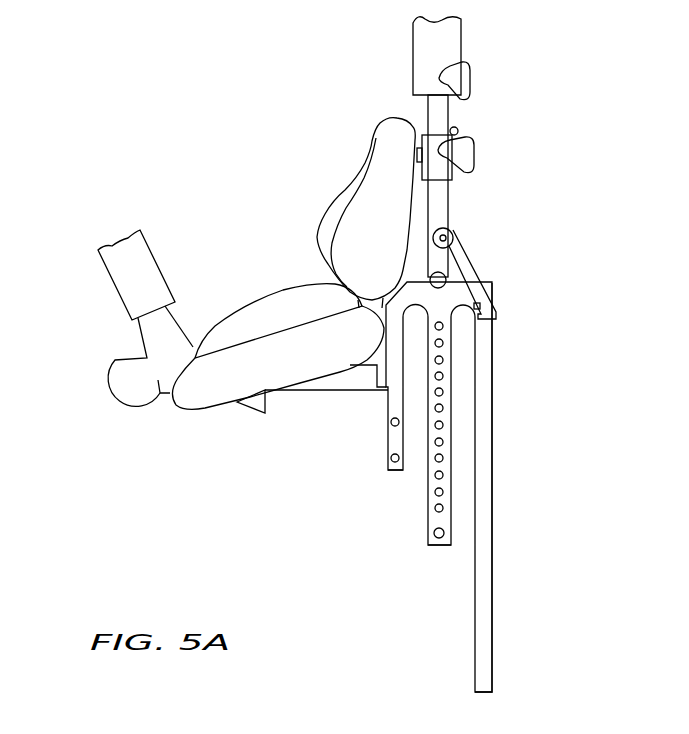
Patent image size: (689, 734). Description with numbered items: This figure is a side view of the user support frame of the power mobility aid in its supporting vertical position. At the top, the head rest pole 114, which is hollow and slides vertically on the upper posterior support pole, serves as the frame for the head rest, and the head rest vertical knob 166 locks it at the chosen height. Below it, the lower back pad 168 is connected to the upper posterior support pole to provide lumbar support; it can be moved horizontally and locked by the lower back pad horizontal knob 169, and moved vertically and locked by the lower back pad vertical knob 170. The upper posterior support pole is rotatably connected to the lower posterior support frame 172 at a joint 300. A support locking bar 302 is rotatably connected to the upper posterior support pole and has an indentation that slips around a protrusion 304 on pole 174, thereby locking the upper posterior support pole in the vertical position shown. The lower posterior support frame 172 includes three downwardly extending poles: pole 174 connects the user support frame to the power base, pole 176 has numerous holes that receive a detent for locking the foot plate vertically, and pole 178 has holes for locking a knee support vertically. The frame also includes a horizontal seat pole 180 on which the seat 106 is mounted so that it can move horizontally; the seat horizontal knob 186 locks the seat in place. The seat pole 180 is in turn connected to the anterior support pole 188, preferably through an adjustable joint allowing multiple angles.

The head rest pole 114 is at (448, 43).
The head rest vertical knob 166 is at (467, 80).
The lower back pad horizontal knob 169 is at (455, 131).
The lower back pad vertical knob 170 is at (462, 155).
The lower back pad 168 is at (345, 200).
The joint 300 is at (425, 275).
The support locking bar 302 is at (462, 243).
The protrusion 304 is at (483, 302).
The lower posterior support frame 172 is at (445, 302).
The pole 174 is at (483, 685).
The pole 176 is at (435, 547).
The pole 178 is at (395, 465).
The horizontal seat pole 180 is at (325, 385).
The seat horizontal knob 186 is at (265, 413).
The seat 106 is at (200, 395).
The anterior support pole 188 is at (118, 268).